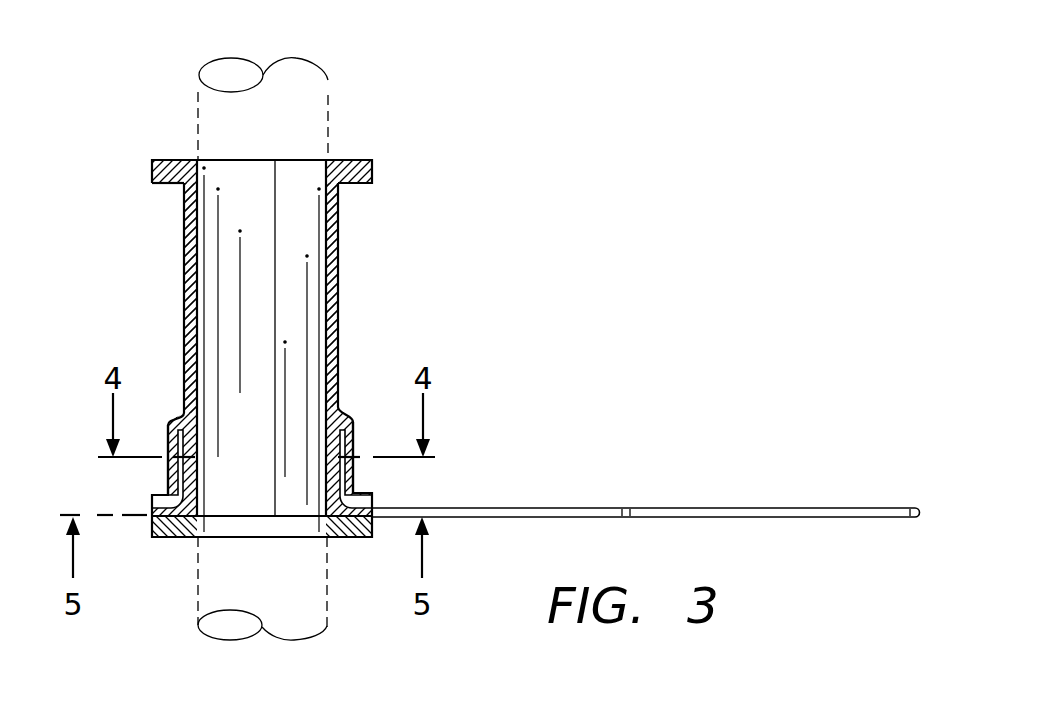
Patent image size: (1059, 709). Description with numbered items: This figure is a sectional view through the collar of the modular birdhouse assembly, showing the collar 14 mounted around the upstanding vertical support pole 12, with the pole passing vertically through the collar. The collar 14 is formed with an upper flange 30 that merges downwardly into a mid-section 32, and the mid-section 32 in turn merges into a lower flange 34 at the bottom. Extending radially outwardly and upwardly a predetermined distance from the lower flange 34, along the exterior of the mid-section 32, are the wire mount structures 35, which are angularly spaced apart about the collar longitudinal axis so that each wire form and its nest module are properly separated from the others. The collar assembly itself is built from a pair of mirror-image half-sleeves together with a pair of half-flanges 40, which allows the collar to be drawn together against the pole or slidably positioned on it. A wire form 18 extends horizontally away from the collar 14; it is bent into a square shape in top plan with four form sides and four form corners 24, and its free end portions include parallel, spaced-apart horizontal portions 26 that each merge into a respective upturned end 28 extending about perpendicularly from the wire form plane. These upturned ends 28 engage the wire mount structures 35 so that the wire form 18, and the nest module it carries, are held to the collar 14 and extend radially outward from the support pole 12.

The support pole 12 is at (328, 85).
The collar 14 is at (257, 315).
The wire form 18 is at (710, 498).
The form corners 24 is at (631, 507).
The horizontal portions 26 is at (373, 508).
The upturned ends 28 is at (351, 448).
The upper flange 30 is at (151, 167).
The mid-section 32 is at (184, 235).
The lower flange 34 is at (162, 493).
The wire mount structures 35 is at (169, 440).
The half-flanges 40 is at (150, 538).